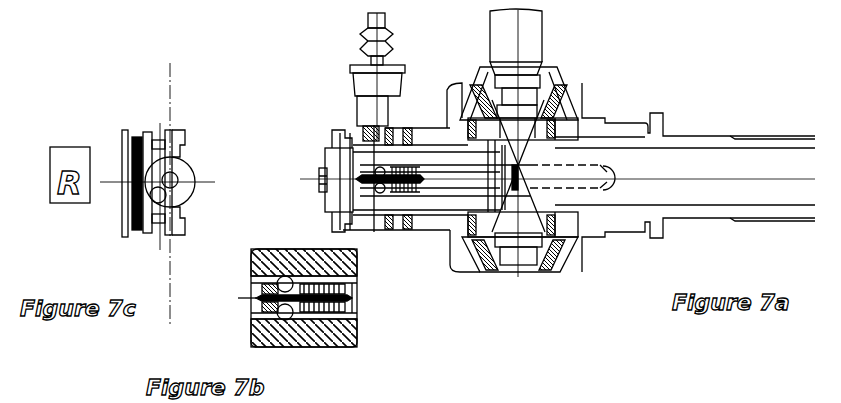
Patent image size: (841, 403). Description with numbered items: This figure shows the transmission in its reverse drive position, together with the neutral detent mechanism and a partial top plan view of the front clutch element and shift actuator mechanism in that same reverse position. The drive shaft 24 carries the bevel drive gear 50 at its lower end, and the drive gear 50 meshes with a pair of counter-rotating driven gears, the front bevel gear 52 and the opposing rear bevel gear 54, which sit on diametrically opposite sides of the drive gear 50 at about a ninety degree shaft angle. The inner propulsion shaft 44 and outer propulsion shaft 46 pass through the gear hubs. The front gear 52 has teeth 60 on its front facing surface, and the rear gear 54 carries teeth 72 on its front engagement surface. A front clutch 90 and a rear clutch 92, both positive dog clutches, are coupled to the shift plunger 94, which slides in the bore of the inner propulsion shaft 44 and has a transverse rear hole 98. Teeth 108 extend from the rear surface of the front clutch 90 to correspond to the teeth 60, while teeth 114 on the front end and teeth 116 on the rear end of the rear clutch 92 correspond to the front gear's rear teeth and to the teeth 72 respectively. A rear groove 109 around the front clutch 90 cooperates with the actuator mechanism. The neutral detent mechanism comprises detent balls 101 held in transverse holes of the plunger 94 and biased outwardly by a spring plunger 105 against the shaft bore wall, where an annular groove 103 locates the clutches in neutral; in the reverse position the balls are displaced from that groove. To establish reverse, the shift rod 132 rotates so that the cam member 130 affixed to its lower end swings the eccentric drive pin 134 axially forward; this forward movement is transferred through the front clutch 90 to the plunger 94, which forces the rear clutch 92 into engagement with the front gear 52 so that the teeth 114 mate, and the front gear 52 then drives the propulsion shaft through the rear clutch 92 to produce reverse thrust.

In FIG. 7a, the drive shaft 24 is at (537, 33).
In FIG. 7a, the inner propulsion shaft 44 is at (709, 190).
In FIG. 7a, the outer propulsion shaft 46 is at (705, 137).
In FIG. 7a, the drive gear 50 is at (545, 77).
In FIG. 7a, the front bevel gear 52 is at (446, 128).
In FIG. 7a, the rear bevel gear 54 is at (588, 98).
In FIG. 7a, the teeth 60 is at (403, 128).
In FIG. 7a, the teeth 72 is at (603, 235).
In FIG. 7a, the front clutch 90 is at (386, 228).
In FIG. 7c, the front clutch 90 is at (122, 152).
In FIG. 7a, the rear clutch 92 is at (520, 265).
In FIG. 7a, the plunger 94 is at (326, 170).
In FIG. 7b, the plunger 94 is at (353, 298).
In FIG. 7a, the rear hole 98 is at (404, 222).
In FIG. 7b, the detent balls 101 is at (260, 268).
In FIG. 7b, the annular groove 103 is at (291, 272).
In FIG. 7b, the spring plunger 105 is at (313, 320).
In FIG. 7b, the teeth 108 is at (352, 286).
In FIG. 7c, the teeth 108 is at (185, 140).
In FIG. 7a, the rear groove 109 is at (330, 240).
In FIG. 7c, the rear groove 109 is at (155, 233).
In FIG. 7a, the teeth 114 is at (491, 250).
In FIG. 7a, the teeth 116 is at (553, 258).
In FIG. 7a, the cam member 130 is at (362, 85).
In FIG. 7c, the cam member 130 is at (178, 170).
In FIG. 7a, the shift rod 132 is at (370, 22).
In FIG. 7a, the drive pin 134 is at (362, 130).
In FIG. 7c, the drive pin 134 is at (182, 200).